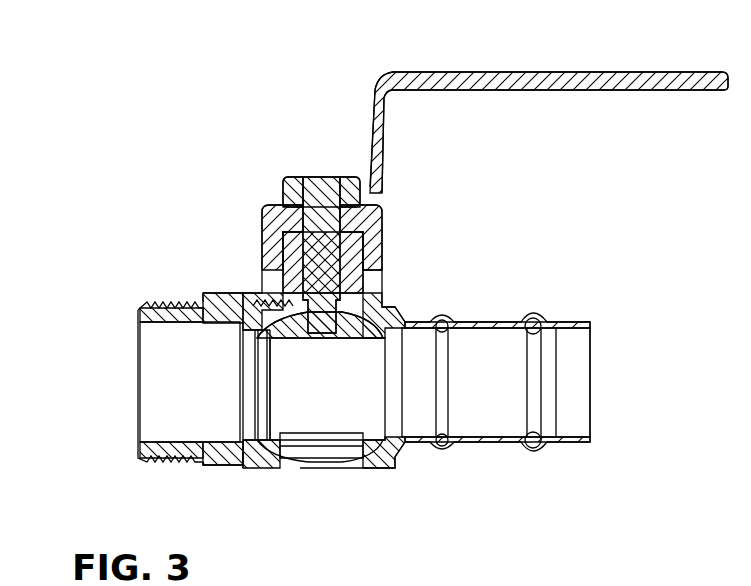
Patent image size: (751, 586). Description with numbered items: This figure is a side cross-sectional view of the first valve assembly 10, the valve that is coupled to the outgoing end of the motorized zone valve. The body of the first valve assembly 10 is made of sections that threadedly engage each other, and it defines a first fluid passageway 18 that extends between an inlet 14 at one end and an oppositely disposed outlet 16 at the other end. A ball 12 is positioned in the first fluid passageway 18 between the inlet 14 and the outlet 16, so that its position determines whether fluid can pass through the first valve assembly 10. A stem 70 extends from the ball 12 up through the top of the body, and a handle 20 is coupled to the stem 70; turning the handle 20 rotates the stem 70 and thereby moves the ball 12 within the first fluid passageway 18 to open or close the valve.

The first valve assembly 10 is at (258, 279).
The ball 12 is at (357, 337).
The inlet 14 is at (165, 308).
The outlet 16 is at (558, 323).
The first fluid passageway 18 is at (225, 383).
The handle 20 is at (590, 72).
The stem 70 is at (320, 177).